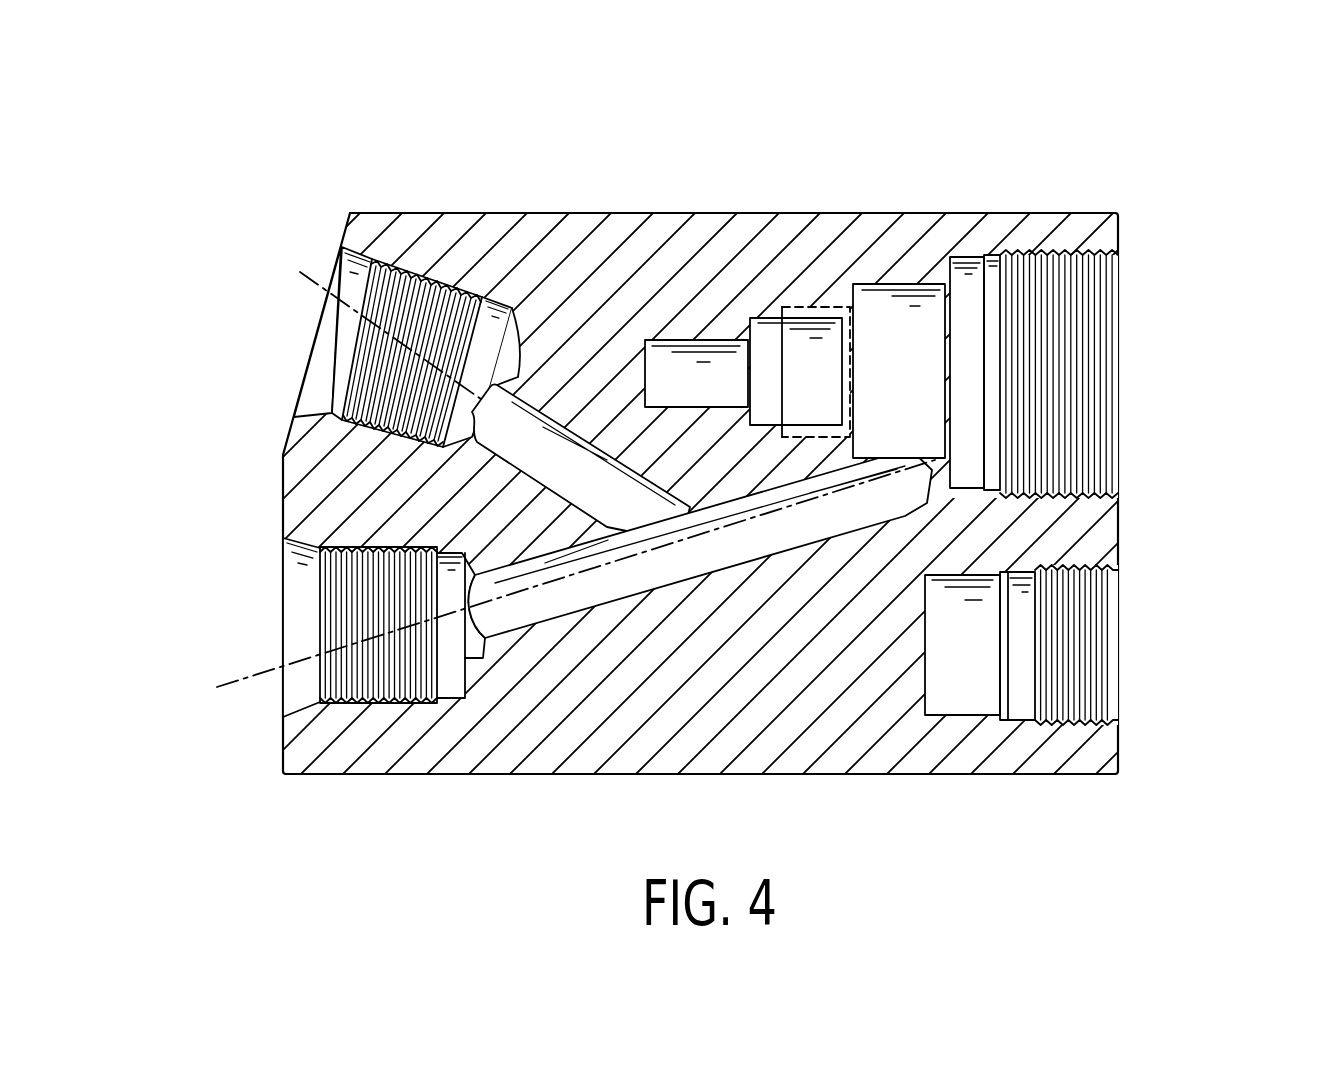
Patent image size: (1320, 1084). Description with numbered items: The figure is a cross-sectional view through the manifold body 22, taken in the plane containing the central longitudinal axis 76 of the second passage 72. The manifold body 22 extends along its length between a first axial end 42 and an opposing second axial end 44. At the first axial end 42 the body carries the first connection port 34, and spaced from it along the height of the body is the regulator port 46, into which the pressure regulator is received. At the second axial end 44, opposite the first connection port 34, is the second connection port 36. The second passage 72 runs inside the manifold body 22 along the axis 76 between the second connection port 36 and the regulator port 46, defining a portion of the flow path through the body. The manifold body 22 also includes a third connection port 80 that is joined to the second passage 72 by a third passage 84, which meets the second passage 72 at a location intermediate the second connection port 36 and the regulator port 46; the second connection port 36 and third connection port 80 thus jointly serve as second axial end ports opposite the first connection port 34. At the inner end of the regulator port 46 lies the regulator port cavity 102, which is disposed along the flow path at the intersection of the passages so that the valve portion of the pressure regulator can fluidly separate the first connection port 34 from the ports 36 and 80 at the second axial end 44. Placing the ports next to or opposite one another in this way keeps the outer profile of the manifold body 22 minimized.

The manifold body 22 is at (1092, 150).
The first connection port 34 is at (1118, 580).
The second connection port 36 is at (283, 580).
The first axial end 42 is at (1133, 742).
The second axial end 44 is at (255, 752).
The regulator port 46 is at (1118, 290).
The second passage 72 is at (510, 615).
The central longitudinal axis of the second passage 76 is at (267, 665).
The third connection port 80 is at (335, 258).
The third passage 84 is at (545, 430).
The regulator port cavity 102 is at (893, 317).